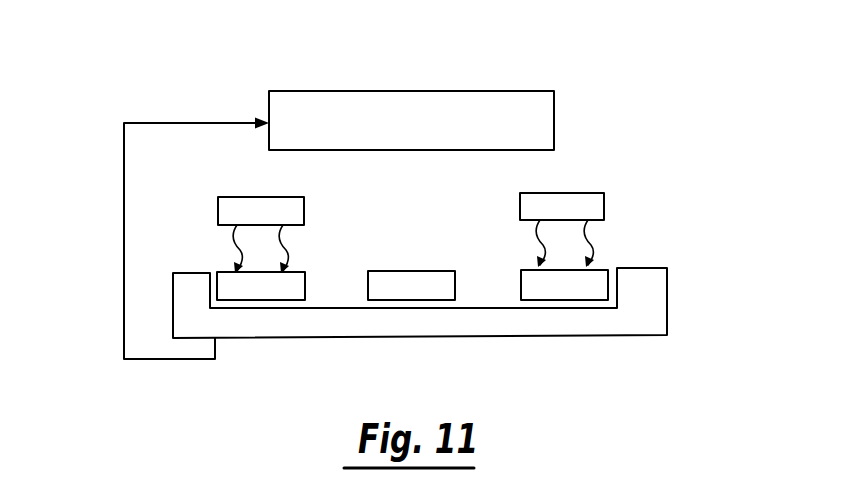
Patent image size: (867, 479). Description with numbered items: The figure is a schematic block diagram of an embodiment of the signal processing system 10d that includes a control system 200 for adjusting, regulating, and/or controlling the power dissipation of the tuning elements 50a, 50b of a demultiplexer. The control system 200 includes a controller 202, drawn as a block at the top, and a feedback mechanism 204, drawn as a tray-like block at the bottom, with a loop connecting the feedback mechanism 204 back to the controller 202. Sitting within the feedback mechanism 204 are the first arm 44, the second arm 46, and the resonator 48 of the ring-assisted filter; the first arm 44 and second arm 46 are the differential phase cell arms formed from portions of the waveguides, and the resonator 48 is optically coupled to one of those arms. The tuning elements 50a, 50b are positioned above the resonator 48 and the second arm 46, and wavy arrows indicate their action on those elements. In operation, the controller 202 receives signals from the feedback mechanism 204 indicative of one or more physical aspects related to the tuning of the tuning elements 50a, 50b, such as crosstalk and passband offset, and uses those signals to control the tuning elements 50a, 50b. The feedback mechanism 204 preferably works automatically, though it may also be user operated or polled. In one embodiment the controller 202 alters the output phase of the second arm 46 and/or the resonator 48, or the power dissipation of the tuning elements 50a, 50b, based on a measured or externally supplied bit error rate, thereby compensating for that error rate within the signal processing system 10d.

The control system 200 is at (107, 229).
The controller 202 is at (545, 110).
The tuning element 50a is at (250, 196).
The tuning element 50b is at (557, 192).
The resonator 48 is at (225, 272).
The first arm 44 is at (377, 271).
The second arm 46 is at (530, 270).
The feedback mechanism 204 is at (658, 317).
The signal processing system 10d is at (640, 229).